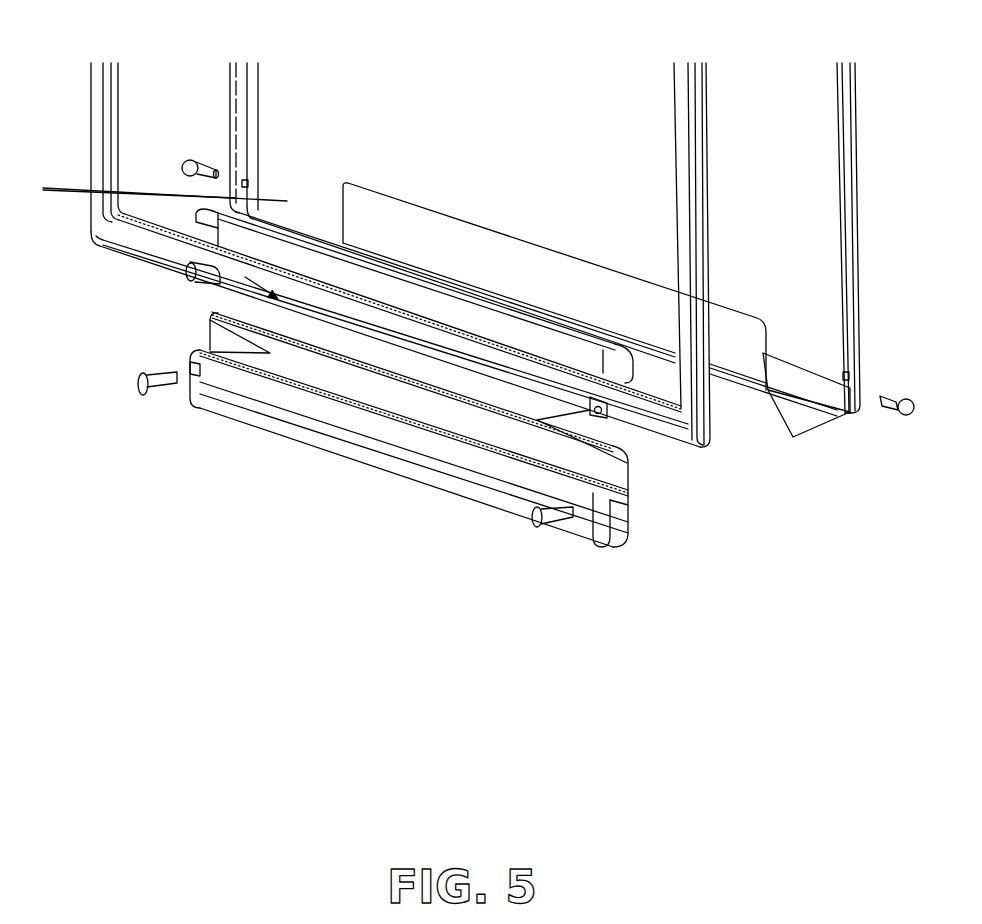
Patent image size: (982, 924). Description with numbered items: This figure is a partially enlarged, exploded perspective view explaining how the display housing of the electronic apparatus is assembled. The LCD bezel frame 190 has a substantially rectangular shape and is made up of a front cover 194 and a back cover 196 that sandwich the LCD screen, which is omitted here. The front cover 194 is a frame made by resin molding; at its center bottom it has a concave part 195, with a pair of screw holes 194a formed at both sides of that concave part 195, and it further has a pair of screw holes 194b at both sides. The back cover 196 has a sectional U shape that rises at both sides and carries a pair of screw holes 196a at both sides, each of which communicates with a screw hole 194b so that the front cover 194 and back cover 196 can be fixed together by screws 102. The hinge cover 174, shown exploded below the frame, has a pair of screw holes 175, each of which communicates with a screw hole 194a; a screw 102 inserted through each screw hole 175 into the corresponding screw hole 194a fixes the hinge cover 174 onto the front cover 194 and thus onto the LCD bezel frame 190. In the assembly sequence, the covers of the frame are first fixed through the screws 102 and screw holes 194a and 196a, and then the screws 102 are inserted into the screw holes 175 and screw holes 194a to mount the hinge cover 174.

The LCD bezel frame 190 is at (55, 92).
The screw 102 is at (186, 158).
The screw hole of the back cover 196a is at (248, 181).
The front cover 194 is at (698, 160).
The back cover 196 is at (848, 154).
The concave part 195 is at (96, 234).
The screw hole of the front cover 194a is at (187, 273).
The screw hole of the front cover 194b is at (712, 413).
The screw hole of the hinge cover 175 is at (195, 362).
The hinge cover 174 is at (285, 432).